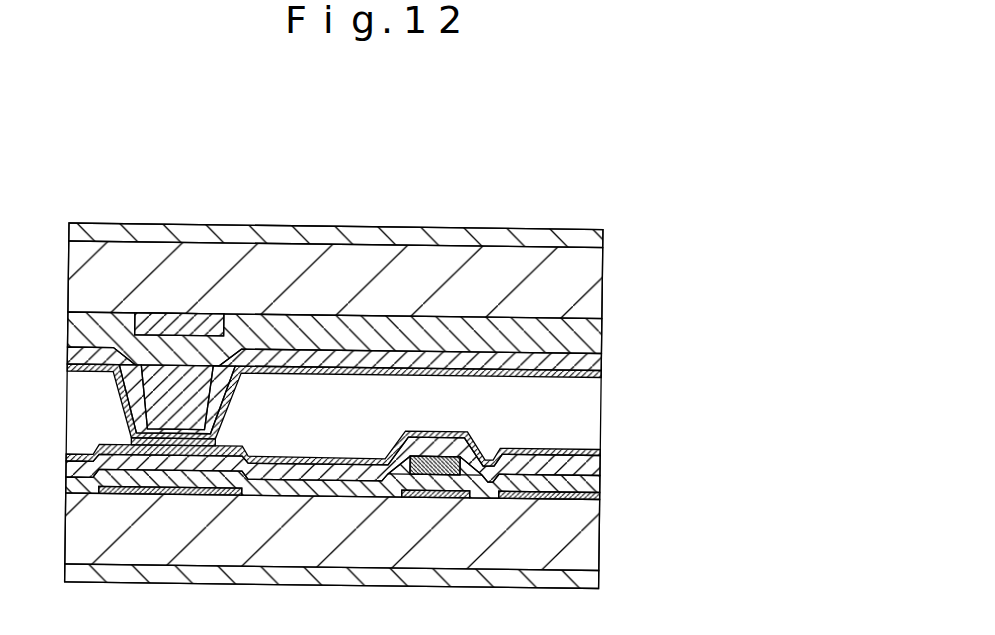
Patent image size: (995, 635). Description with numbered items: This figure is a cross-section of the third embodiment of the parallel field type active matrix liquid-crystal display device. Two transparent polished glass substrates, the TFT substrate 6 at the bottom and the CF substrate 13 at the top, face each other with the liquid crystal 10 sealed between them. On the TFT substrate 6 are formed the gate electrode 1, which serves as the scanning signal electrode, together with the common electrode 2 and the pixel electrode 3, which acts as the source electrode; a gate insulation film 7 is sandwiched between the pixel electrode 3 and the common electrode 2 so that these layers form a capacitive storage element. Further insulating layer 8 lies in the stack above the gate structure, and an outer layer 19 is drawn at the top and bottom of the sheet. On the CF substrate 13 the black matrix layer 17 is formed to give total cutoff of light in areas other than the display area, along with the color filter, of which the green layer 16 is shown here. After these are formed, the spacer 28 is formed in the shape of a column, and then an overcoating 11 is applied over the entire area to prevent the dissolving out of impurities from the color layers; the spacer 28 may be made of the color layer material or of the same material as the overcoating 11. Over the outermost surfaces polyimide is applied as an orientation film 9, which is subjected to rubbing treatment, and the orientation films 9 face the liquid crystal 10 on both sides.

The gate electrode 1 is at (541, 492).
The common electrode 2 is at (446, 493).
The pixel electrode 3 is at (450, 460).
The TFT substrate 6 is at (592, 534).
The gate insulation film 7 is at (603, 476).
The interlayer insulating film 8 is at (603, 456).
The orientation film 9 is at (600, 366).
The liquid crystal 10 is at (594, 393).
The overcoating 11 is at (597, 354).
The CF substrate 13 is at (587, 285).
The green layer 16 is at (593, 332).
The black matrix layer 17 is at (191, 328).
The polarizer 19 is at (606, 225).
The spacer 28 is at (187, 389).